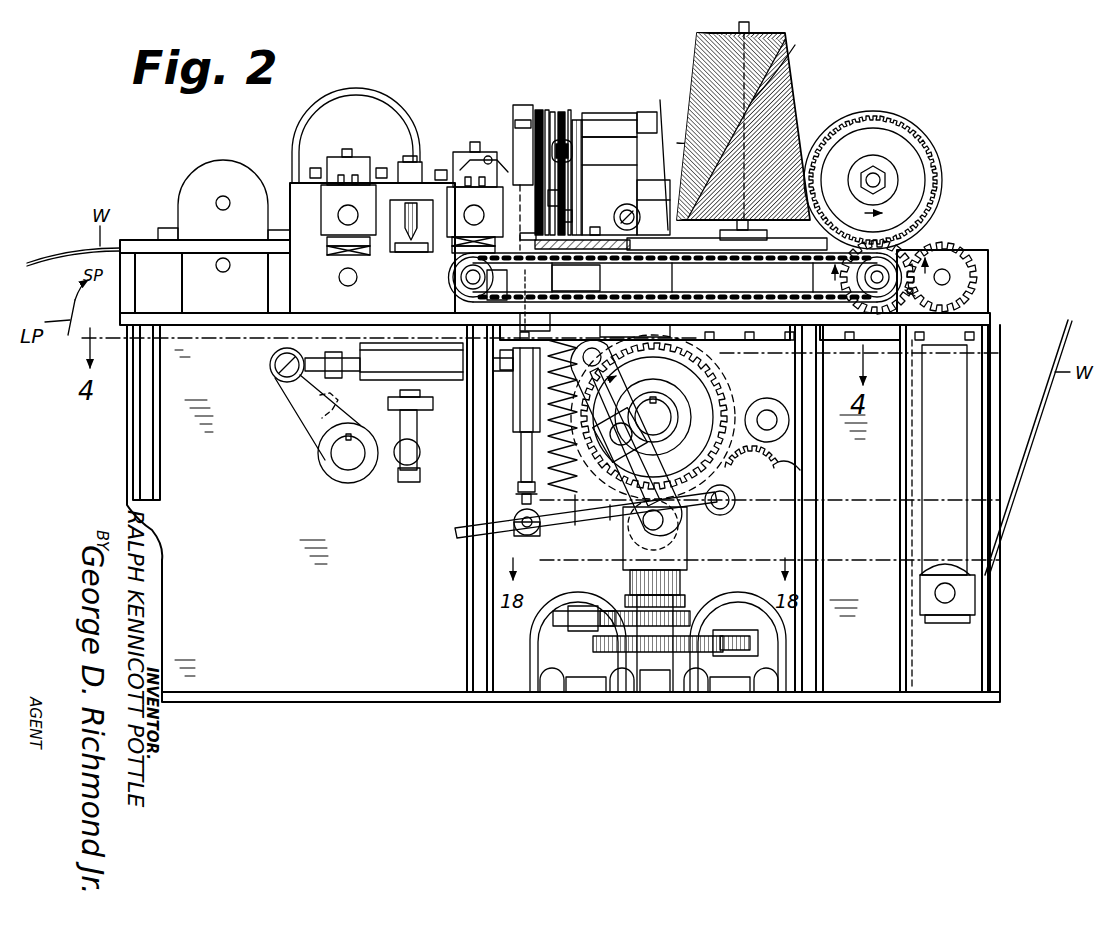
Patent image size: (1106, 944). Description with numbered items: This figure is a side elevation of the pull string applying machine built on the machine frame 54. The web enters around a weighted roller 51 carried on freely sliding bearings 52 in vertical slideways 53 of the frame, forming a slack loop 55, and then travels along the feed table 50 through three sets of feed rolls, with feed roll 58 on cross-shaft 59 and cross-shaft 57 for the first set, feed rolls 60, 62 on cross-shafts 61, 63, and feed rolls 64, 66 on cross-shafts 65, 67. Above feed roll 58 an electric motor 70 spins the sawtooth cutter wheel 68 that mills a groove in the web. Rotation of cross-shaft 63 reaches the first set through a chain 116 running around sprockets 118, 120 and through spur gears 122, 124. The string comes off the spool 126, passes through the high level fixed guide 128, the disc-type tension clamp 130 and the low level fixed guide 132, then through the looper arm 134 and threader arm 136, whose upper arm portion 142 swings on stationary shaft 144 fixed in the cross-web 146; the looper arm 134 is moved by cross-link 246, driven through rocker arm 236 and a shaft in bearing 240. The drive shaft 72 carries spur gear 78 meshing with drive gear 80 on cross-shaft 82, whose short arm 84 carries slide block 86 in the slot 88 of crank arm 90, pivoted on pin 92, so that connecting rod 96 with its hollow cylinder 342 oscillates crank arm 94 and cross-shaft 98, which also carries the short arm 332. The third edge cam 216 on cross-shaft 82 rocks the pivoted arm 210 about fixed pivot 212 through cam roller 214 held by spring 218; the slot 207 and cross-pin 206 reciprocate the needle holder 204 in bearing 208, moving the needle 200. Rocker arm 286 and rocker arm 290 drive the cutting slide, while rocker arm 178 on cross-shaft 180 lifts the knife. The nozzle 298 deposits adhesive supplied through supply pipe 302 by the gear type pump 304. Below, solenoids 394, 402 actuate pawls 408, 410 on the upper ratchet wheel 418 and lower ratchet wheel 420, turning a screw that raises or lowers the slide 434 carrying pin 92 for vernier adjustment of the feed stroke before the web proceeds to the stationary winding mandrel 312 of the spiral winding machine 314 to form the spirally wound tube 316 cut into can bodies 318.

The supply pipe 302 is at (347, 98).
The gear type pump 304 is at (215, 170).
The cross-shaft 65 is at (343, 217).
The feed roll 64 is at (335, 240).
The feed roll 66 is at (347, 256).
The drive roll shaft 67 is at (344, 282).
The nozzle 298 is at (406, 228).
The cross-shaft 61 is at (467, 212).
The feed roll 60 is at (455, 250).
The feed roll 62 is at (462, 281).
The cross-shaft 63 is at (464, 294).
The cross-shaft 180 is at (482, 156).
The rocker arm 178 is at (512, 150).
The cross-web 146 is at (538, 125).
The upper arm portion 142 is at (552, 140).
The stationary shaft 144 is at (562, 112).
The looper arm 134 is at (560, 176).
The cross-link 246 is at (574, 152).
The bearing 240 is at (600, 112).
The rocker arm 236 is at (648, 112).
The low level fixed guide 132 is at (596, 227).
The disc-type tension clamp 130 is at (636, 224).
The high level fixed guide 128 is at (677, 143).
The spool 126 is at (797, 76).
The electric motor 70 is at (901, 118).
The sawtooth cutter wheel 68 is at (922, 154).
The chain 116 is at (795, 258).
The rocker arm 290 is at (580, 256).
The feed table 50 is at (606, 258).
The threader arm 136 is at (520, 236).
The sprocket 118 is at (497, 268).
The needle 200 is at (510, 300).
The bearing 208 is at (535, 318).
The rocker arm 286 is at (606, 350).
The feed roll 58 is at (908, 262).
The sprocket 120 is at (850, 305).
The cross-shaft 59 is at (878, 306).
The cross-shaft 57 is at (948, 274).
The spur gear 124 is at (958, 276).
The spur gear 122 is at (912, 294).
The connecting rod 96 is at (406, 342).
The hollow cylinder 342 is at (409, 364).
The short arm 332 is at (305, 418).
The crank arm 94 is at (315, 433).
The cross-shaft 98 is at (344, 462).
The stationary winding mandrel 312 is at (420, 408).
The spiral winding machine 314 is at (414, 421).
The spirally wound tube 316 is at (420, 447).
The can bodies 318 is at (396, 480).
The needle holder 204 is at (536, 470).
The spring 218 is at (540, 436).
The slot 207 is at (514, 524).
The crank arm 90 is at (612, 474).
The cross-pin 206 is at (560, 524).
The pivoted arm 210 is at (608, 520).
The third edge cam 216 is at (695, 450).
The cam roller 214 is at (654, 416).
The short arm 84 is at (692, 335).
The cross-shaft 82 is at (660, 418).
The slide block 86 is at (620, 382).
The slot 88 is at (640, 465).
The pin 92 is at (668, 522).
The fixed pivot 212 is at (736, 500).
The drive shaft 72 is at (767, 410).
The drive gear 80 is at (782, 446).
The spur gear 78 is at (786, 458).
The machine frame 54 is at (900, 548).
The vertical slideways 53 is at (965, 435).
The bearings 52 is at (975, 592).
The weighted roller 51 is at (948, 618).
The slack loop 55 is at (1040, 418).
The solenoid 394 is at (555, 592).
The solenoid 402 is at (727, 602).
The slide 434 is at (682, 585).
The upper ratchet wheel 418 is at (596, 611).
The pawl 408 is at (582, 630).
The lower ratchet wheel 420 is at (618, 652).
The pawl 410 is at (735, 640).